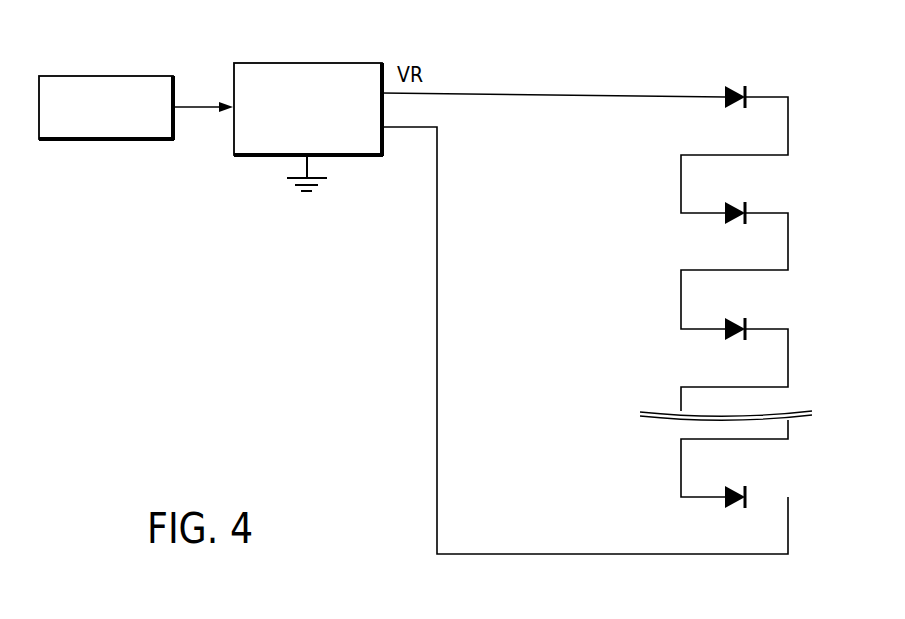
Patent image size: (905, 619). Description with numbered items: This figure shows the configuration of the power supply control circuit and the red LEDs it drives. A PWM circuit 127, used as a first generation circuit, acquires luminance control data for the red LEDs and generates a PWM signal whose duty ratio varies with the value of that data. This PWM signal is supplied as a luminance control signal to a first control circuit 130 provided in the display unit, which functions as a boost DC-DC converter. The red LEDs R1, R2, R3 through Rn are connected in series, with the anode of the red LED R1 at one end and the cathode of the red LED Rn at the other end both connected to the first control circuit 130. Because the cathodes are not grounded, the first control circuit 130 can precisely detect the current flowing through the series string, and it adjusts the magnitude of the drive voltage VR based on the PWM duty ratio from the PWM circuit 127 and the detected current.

The PWM circuit 127 is at (108, 142).
The first control circuit 130 is at (290, 63).
The red LED R1 is at (735, 86).
The red LED R2 is at (735, 202).
The red LED R3 is at (733, 318).
The red LED Rn is at (731, 486).